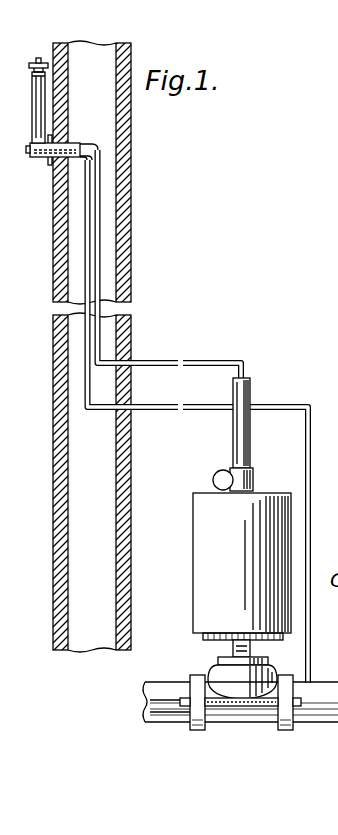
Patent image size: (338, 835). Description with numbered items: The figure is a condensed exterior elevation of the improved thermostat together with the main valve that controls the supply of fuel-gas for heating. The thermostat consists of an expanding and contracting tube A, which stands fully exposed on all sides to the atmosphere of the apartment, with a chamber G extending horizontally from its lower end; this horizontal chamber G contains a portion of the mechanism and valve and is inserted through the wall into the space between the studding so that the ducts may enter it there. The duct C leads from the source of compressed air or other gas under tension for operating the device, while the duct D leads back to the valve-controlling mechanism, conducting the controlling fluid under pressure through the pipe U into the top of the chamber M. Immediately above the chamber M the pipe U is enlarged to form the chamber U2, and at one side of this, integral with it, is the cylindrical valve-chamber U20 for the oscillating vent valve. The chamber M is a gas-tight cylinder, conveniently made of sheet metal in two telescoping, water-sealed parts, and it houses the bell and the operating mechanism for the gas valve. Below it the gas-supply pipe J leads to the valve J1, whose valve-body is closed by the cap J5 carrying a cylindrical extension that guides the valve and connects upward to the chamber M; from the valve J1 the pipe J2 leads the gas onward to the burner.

The expanding and contracting tube A is at (37, 105).
The chamber G is at (38, 160).
The duct D is at (154, 360).
The duct C is at (268, 406).
The pipe U is at (251, 430).
The chamber U2 is at (254, 480).
The valve-chamber U20 is at (216, 472).
The chamber M is at (242, 566).
The cap J5 is at (214, 672).
The gas-supply pipe J is at (318, 718).
The valve J1 is at (240, 718).
The pipe J2 is at (166, 718).